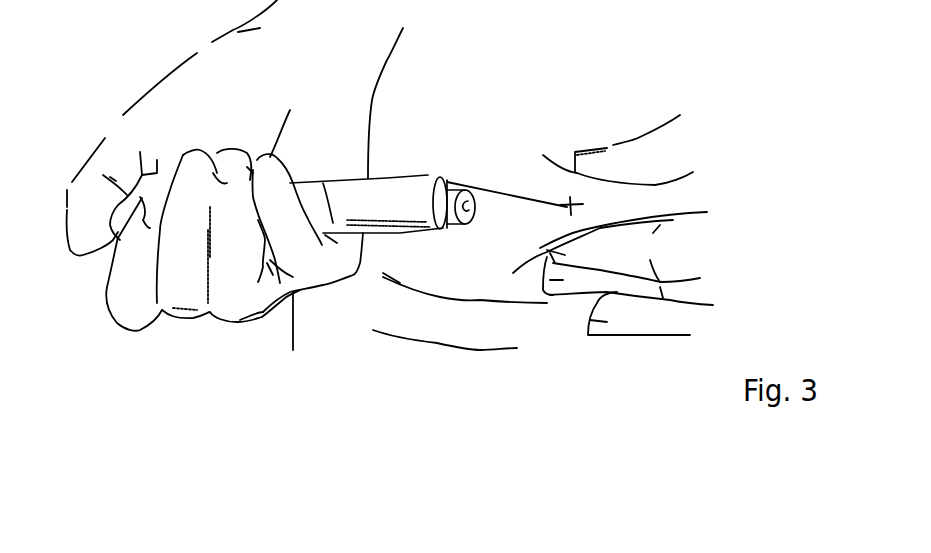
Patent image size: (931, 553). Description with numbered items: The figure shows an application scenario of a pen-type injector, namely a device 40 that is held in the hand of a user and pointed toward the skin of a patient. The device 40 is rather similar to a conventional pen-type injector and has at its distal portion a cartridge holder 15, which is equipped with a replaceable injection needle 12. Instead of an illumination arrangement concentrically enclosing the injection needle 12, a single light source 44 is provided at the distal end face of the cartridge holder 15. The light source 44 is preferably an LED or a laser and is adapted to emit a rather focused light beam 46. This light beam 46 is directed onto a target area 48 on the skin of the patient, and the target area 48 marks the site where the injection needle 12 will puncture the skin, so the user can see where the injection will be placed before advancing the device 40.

The device 40 is at (331, 140).
The cartridge holder 15 is at (400, 187).
The light source 44 is at (444, 180).
The light beam 46 is at (525, 197).
The target area 48 is at (583, 204).
The injection needle 12 is at (507, 205).